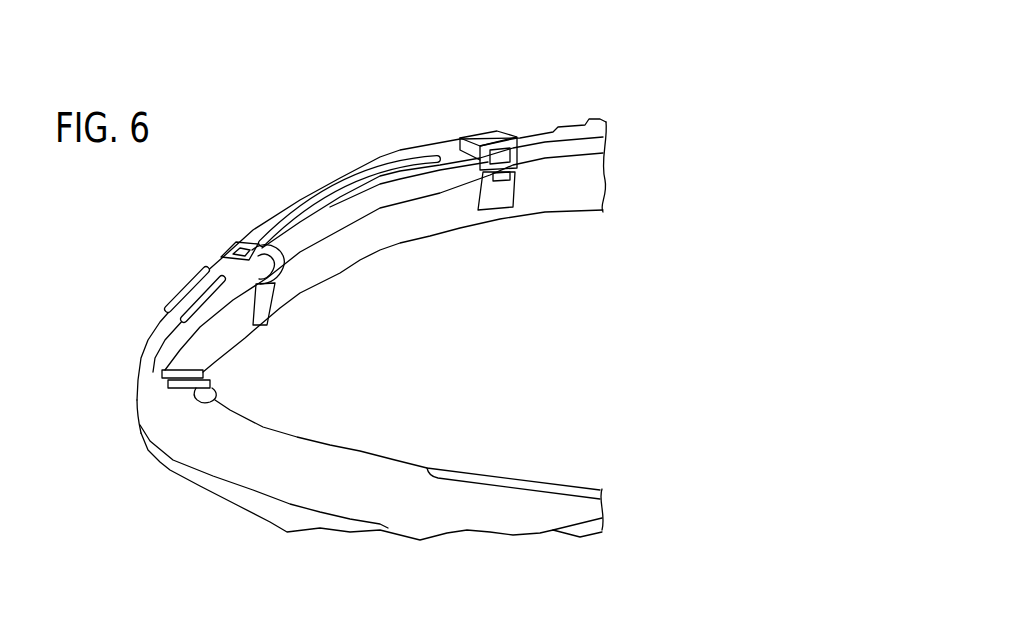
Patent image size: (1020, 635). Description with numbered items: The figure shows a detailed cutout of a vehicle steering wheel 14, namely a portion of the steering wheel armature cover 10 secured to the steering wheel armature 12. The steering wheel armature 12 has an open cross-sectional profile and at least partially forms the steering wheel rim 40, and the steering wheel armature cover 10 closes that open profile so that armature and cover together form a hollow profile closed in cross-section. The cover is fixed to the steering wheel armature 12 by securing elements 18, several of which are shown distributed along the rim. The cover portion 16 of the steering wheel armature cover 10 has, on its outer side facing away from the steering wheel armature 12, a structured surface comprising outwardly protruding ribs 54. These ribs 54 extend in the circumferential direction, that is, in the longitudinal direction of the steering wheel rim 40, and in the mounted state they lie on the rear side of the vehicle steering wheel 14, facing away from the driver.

The steering wheel armature cover 10 is at (362, 460).
The steering wheel armature 12 is at (258, 510).
The vehicle steering wheel 14 is at (568, 78).
The cover portion 16 is at (230, 430).
The securing element 18 is at (517, 170).
The steering wheel rim 40 is at (126, 389).
The ribs 54 is at (346, 178).